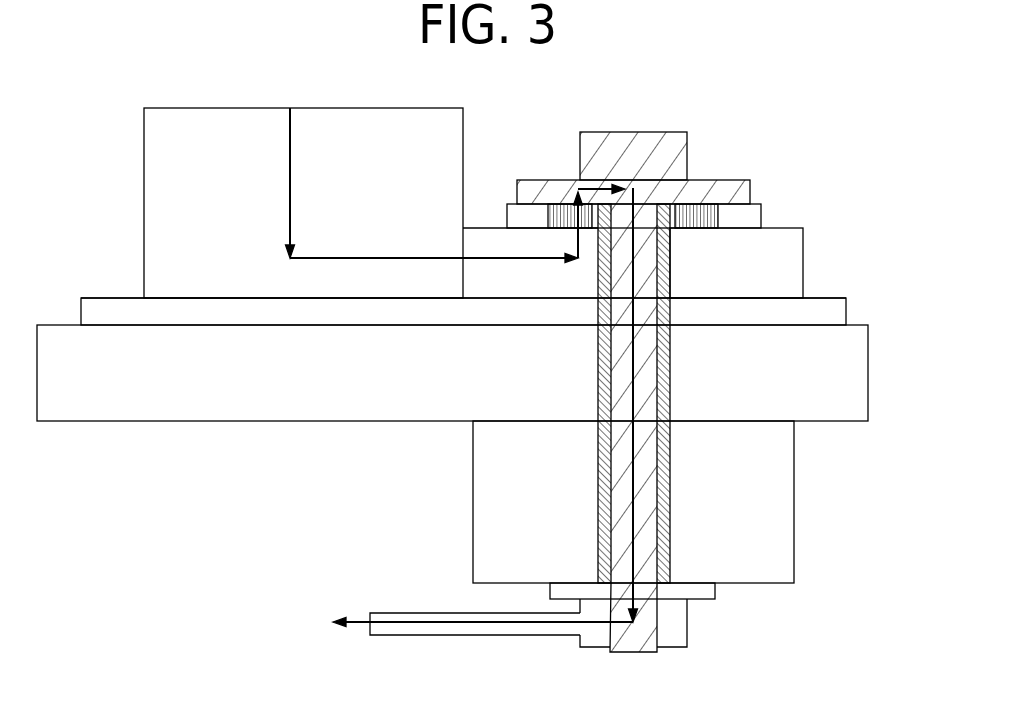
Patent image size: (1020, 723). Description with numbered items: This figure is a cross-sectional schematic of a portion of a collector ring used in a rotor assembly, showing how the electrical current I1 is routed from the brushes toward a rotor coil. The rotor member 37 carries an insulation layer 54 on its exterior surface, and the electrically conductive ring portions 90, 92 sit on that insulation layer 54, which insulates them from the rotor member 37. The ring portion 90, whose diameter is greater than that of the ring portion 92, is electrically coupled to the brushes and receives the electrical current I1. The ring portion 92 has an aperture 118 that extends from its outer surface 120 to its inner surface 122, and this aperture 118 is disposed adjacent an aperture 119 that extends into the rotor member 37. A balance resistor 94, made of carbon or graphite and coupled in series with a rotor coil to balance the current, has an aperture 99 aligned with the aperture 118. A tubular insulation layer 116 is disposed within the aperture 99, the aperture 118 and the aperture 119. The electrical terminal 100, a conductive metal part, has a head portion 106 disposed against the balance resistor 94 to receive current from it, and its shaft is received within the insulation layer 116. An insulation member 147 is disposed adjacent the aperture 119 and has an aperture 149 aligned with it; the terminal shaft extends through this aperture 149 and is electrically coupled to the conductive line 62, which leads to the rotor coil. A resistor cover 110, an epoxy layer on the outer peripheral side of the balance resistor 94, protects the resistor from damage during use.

The rotor member 37 is at (870, 368).
The insulation layer 54 is at (847, 312).
The conductive line 62 is at (443, 612).
The ring portion 90 is at (205, 108).
The ring portion 92 is at (675, 190).
The balance resistor 94 is at (710, 208).
The aperture 99 is at (668, 190).
The electrical terminal 100 is at (660, 131).
The head portion 106 is at (733, 180).
The resistor cover 110 is at (762, 216).
The insulation layer 116 is at (670, 281).
The aperture 118 is at (665, 254).
The aperture 119 is at (665, 366).
The outer surface 120 is at (785, 228).
The inner surface 122 is at (822, 297).
The insulation member 147 is at (717, 590).
The aperture 149 is at (656, 572).
The electrical current I1 is at (292, 133).